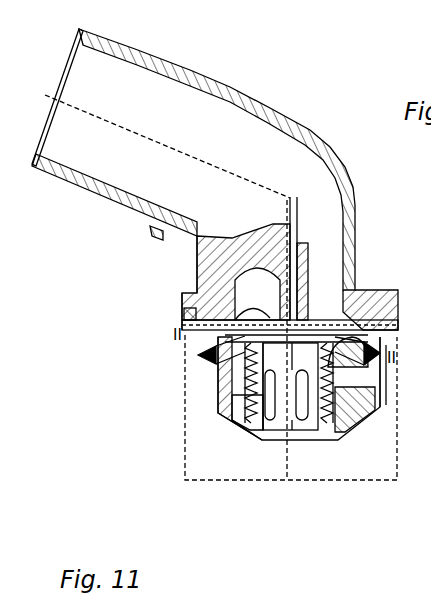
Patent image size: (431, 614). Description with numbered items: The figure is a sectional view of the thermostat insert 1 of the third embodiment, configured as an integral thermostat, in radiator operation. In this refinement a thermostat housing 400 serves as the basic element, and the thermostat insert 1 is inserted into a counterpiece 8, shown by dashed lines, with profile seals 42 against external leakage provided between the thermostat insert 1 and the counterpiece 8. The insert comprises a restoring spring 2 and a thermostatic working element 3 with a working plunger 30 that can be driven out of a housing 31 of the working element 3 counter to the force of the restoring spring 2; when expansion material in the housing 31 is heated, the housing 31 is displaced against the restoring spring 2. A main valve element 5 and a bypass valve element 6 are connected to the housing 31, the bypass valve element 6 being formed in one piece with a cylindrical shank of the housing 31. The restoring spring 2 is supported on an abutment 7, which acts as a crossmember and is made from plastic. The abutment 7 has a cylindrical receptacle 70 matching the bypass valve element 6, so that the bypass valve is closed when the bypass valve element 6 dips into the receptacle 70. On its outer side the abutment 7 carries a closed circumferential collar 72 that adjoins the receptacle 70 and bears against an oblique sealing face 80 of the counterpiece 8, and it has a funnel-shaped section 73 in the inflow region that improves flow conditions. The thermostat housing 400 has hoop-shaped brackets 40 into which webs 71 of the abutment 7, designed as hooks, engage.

The thermostat insert 1 is at (297, 95).
The thermostat housing 400 is at (177, 67).
The thermostatic working element 3 is at (316, 216).
The working plunger 30 is at (298, 197).
The housing 31 is at (307, 300).
The profile seals 42 is at (385, 318).
The main valve element 5 is at (197, 285).
The abutment 7 is at (223, 492).
The restoring spring 2 is at (200, 390).
The brackets 40 is at (207, 371).
The webs 71 is at (230, 355).
The collar 72 is at (232, 405).
The receptacle 70 is at (270, 440).
The bypass valve element 6 is at (285, 440).
The funnel-shaped section 73 is at (331, 445).
The oblique sealing face 80 is at (365, 455).
The counterpiece 8 is at (382, 445).